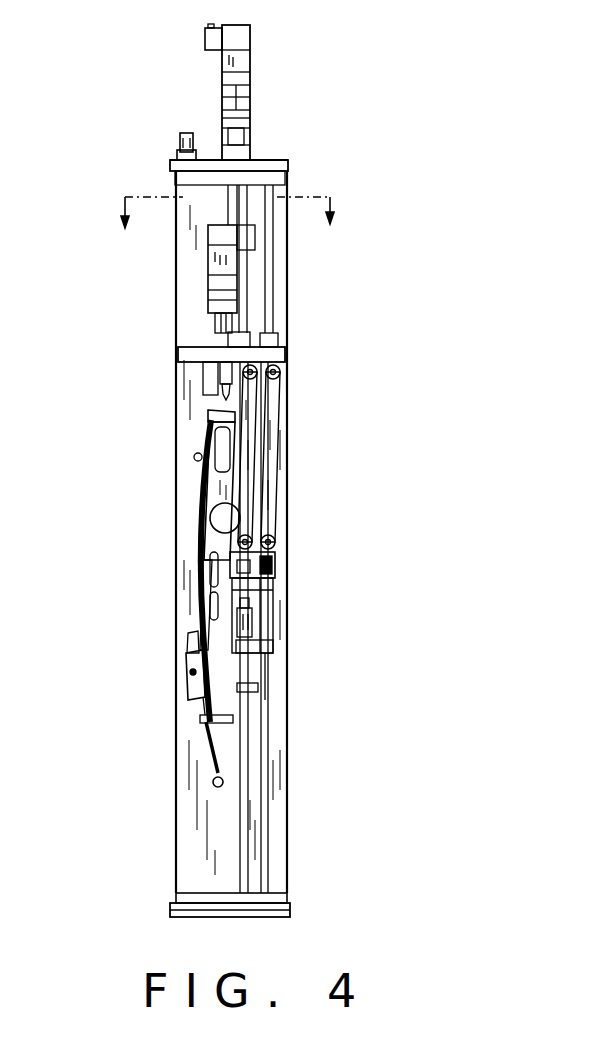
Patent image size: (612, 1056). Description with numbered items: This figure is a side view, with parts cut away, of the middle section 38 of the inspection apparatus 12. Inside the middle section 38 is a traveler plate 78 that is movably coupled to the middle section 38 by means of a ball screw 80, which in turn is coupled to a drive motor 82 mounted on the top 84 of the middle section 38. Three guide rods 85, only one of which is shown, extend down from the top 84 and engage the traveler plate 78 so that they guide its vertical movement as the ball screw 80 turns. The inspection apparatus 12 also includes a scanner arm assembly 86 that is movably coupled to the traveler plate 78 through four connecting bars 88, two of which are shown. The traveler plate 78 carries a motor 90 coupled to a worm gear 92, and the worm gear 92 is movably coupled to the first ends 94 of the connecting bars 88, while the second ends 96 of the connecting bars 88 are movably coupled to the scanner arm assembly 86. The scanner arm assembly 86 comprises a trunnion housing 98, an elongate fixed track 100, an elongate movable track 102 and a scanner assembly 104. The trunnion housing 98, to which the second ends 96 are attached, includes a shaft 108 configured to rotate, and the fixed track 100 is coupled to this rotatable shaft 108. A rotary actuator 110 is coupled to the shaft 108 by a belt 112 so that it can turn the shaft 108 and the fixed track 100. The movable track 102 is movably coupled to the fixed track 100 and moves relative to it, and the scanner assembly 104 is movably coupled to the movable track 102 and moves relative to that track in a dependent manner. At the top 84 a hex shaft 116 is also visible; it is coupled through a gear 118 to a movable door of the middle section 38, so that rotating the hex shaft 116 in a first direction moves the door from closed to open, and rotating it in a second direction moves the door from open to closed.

The inspection apparatus 12 is at (410, 124).
The middle section 38 is at (296, 711).
The traveler plate 78 is at (288, 357).
The ball screw 80 is at (247, 268).
The drive motor 82 is at (250, 58).
The top 84 is at (268, 158).
The guide rods 85 is at (270, 308).
The scanner arm assembly 86 is at (178, 526).
The connecting bars 88 is at (250, 432).
The motor 90 is at (210, 267).
The worm gear 92 is at (272, 342).
The first ends 94 is at (258, 378).
The second ends 96 is at (242, 530).
The trunnion housing 98 is at (273, 598).
The fixed track 100 is at (210, 437).
The movable track 102 is at (208, 481).
The scanner assembly 104 is at (170, 694).
The shaft 108 is at (276, 562).
The rotary actuator 110 is at (253, 622).
The belt 112 is at (225, 570).
The hex shaft 116 is at (183, 133).
The gear 118 is at (168, 158).